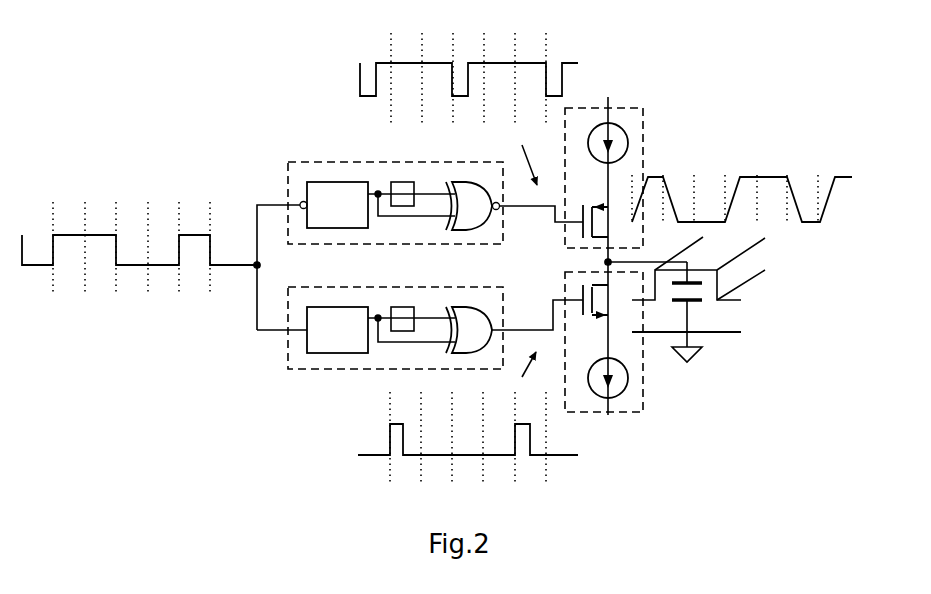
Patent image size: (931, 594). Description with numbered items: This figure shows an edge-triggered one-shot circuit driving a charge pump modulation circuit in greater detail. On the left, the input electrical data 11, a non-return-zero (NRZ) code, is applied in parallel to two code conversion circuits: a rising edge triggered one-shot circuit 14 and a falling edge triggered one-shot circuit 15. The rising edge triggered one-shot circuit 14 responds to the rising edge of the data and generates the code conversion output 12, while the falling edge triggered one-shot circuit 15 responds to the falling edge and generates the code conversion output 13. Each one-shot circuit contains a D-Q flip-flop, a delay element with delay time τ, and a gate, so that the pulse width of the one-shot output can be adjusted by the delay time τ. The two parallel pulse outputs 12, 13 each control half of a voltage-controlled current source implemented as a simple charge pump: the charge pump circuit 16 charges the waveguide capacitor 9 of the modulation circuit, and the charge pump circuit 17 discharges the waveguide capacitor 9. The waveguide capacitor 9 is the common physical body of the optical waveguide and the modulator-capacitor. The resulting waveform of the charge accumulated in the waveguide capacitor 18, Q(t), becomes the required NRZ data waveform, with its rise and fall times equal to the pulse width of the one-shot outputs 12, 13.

The waveguide capacitor 9 is at (755, 302).
The input electrical data 11 is at (92, 224).
The output of the code conversion corresponding to the rising edge 12 is at (421, 57).
The output of the code conversion corresponding to the falling edge 13 is at (420, 469).
The rising edge triggered one-shot circuit 14 is at (346, 158).
The falling edge triggered one-shot circuit 15 is at (312, 374).
The charge pump circuit 16 is at (645, 119).
The charge pump circuit 17 is at (645, 413).
The waveform of the charge accumulated in the waveguide capacitor Q(t) 18 is at (734, 179).